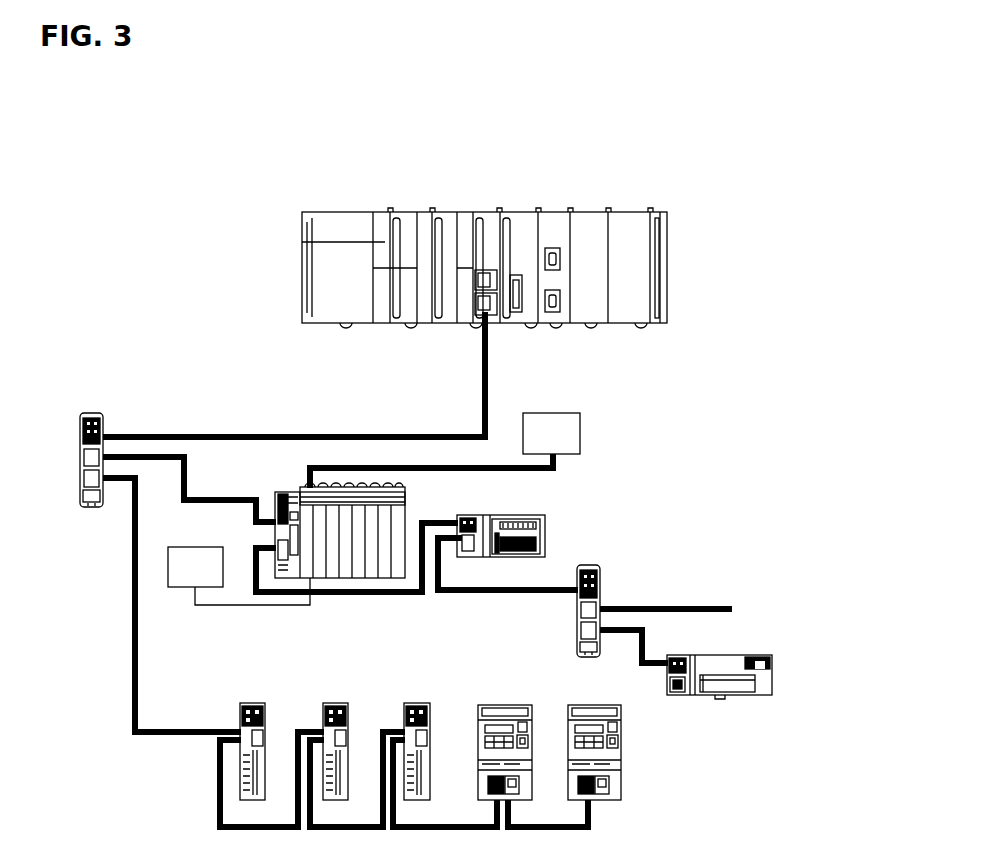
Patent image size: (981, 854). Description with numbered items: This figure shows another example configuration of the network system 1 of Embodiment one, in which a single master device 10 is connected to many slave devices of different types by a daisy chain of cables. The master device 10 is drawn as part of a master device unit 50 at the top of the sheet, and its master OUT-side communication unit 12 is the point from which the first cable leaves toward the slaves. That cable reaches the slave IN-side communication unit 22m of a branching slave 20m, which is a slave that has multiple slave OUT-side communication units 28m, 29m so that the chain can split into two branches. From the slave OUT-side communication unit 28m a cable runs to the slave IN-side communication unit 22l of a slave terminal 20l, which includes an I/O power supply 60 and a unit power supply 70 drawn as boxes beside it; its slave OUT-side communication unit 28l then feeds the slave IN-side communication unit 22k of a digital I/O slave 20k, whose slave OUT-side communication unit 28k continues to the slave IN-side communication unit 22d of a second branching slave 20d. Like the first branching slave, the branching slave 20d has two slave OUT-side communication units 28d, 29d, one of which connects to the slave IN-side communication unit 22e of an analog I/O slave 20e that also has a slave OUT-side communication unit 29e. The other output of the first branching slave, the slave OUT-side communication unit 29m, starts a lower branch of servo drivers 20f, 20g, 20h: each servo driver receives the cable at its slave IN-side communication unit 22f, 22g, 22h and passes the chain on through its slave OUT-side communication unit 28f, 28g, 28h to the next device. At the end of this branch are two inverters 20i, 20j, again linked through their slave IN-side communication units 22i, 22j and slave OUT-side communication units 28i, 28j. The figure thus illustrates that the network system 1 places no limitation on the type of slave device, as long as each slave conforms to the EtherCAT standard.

The network system 1 is at (523, 95).
The master device unit 50 is at (376, 182).
The master device 10 is at (483, 211).
The master OUT-side communication unit 12 is at (470, 326).
The unit power supply 70 is at (556, 413).
The I/O power supply 60 is at (183, 589).
The branching slave 20m is at (92, 412).
The slave IN-side communication unit 22m is at (84, 436).
The slave OUT-side communication unit 28m is at (84, 456).
The slave OUT-side communication unit 29m is at (84, 477).
The slave terminal 20l is at (405, 512).
The slave IN-side communication unit 22l is at (281, 494).
The slave OUT-side communication unit 28l is at (278, 548).
The digital I/O slave 20k is at (519, 516).
The slave IN-side communication unit 22k is at (466, 516).
The slave OUT-side communication unit 28k is at (472, 553).
The branching slave 20d is at (587, 565).
The slave IN-side communication unit 22d is at (597, 586).
The slave OUT-side communication unit 28d is at (581, 608).
The slave OUT-side communication unit 29d is at (581, 629).
The analog I/O slave 20e is at (730, 655).
The slave IN-side communication unit 22e is at (675, 657).
The slave OUT-side communication unit 29e is at (677, 692).
The servo driver 20f is at (253, 703).
The slave IN-side communication unit 22f is at (260, 728).
The slave OUT-side communication unit 28f is at (262, 744).
The servo driver 20g is at (336, 703).
The slave IN-side communication unit 22g is at (343, 728).
The slave OUT-side communication unit 28g is at (345, 744).
The servo driver 20h is at (417, 703).
The slave IN-side communication unit 22h is at (425, 728).
The slave OUT-side communication unit 28h is at (427, 744).
The inverter 20i is at (504, 705).
The slave IN-side communication unit 22i is at (490, 785).
The slave OUT-side communication unit 28i is at (513, 787).
The inverter 20j is at (594, 705).
The slave IN-side communication unit 22j is at (580, 785).
The slave OUT-side communication unit 28j is at (603, 787).